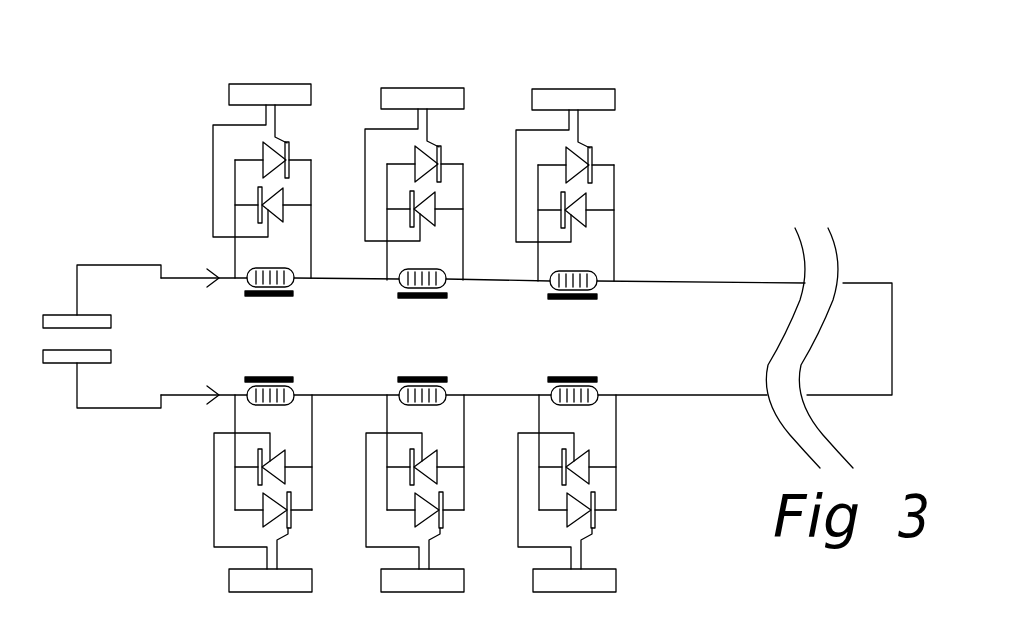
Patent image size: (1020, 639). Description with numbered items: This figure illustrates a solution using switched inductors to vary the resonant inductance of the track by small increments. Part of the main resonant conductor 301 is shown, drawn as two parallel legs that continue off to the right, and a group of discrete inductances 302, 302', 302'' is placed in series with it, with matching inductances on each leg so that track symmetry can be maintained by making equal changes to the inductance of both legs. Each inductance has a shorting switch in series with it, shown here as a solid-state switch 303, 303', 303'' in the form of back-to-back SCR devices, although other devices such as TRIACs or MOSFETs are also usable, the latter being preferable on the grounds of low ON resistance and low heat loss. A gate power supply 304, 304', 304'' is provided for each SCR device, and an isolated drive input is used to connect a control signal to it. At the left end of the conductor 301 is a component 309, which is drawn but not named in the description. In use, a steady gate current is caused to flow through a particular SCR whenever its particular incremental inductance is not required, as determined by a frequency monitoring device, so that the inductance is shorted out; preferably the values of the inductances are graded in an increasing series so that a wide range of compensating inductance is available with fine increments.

The main resonant conductor 301 is at (685, 282).
The discrete inductance 302 is at (269, 336).
The discrete inductance 302' is at (421, 337).
The discrete inductance 302'' is at (565, 338).
The solid-state switch 303 is at (240, 139).
The solid-state switch 303' is at (385, 140).
The solid-state switch 303'' is at (536, 140).
The gate power supply 304 is at (254, 75).
The gate power supply 304' is at (412, 74).
The gate power supply 304'' is at (581, 65).
The capacitor / source 309 is at (98, 315).